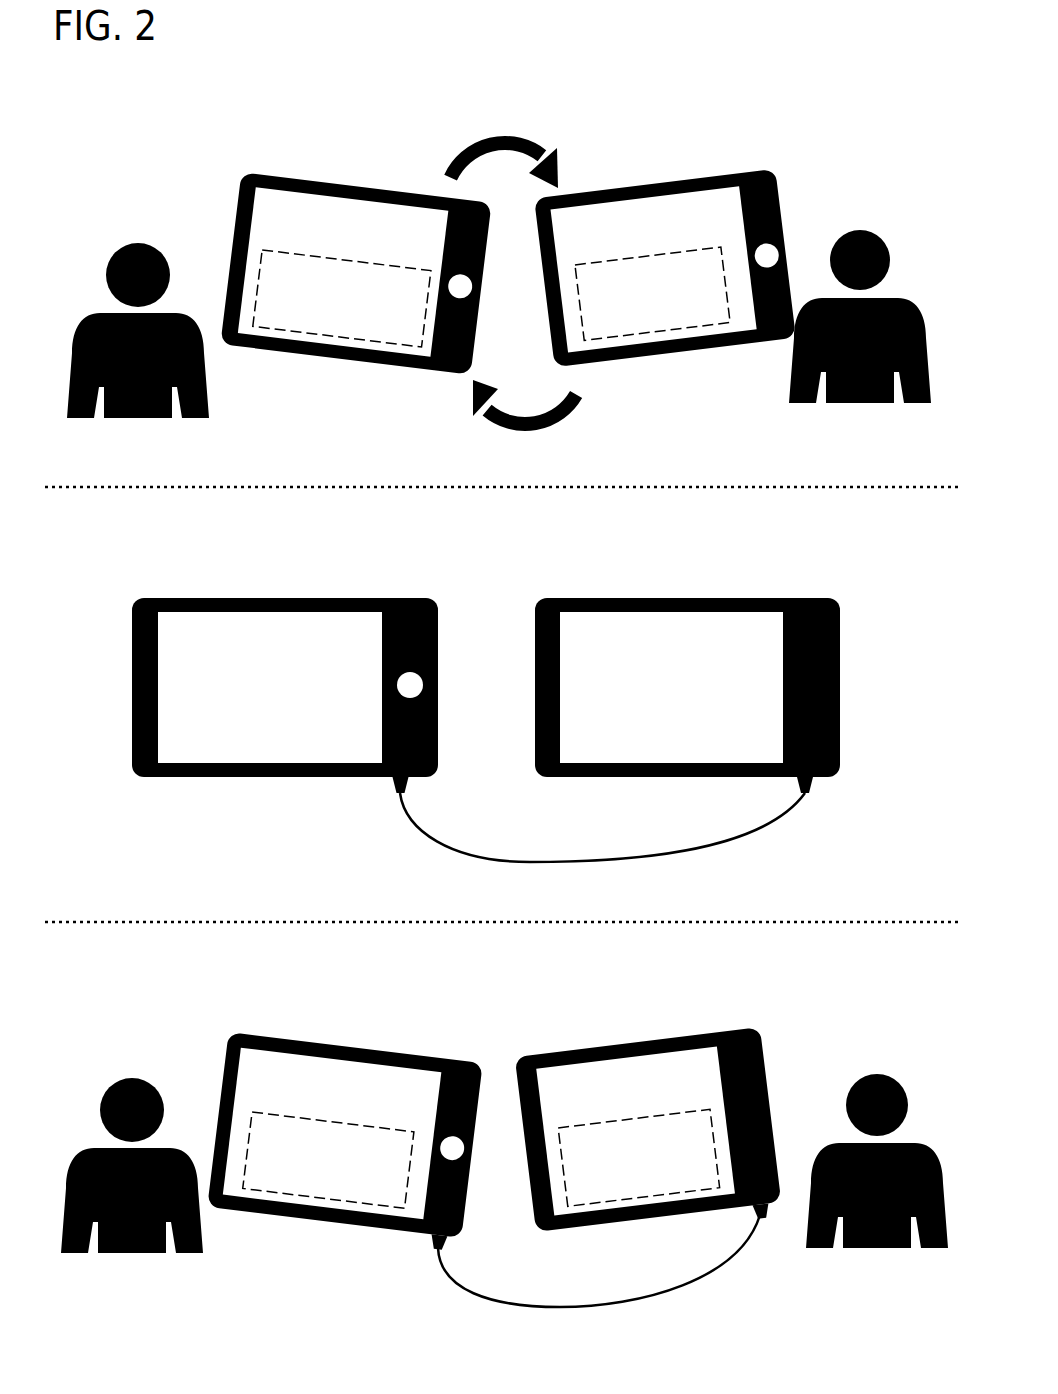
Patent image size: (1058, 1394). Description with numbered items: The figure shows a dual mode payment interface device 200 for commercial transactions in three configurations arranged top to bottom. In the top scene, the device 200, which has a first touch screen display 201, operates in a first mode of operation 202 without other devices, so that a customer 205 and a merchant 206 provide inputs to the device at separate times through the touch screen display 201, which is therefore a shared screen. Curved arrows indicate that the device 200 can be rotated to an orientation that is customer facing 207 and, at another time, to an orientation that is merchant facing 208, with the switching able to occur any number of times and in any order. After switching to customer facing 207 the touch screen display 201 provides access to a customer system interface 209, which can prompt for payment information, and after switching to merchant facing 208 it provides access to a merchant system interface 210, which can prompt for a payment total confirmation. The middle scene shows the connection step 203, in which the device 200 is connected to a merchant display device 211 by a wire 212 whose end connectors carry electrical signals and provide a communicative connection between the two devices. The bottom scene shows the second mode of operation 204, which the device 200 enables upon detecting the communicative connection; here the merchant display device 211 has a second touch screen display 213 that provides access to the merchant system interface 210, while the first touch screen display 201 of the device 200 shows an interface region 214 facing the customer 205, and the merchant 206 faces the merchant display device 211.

The dual mode payment interface device 200 is at (253, 172).
The first touch screen display 201 is at (457, 702).
The first mode of operation 202 is at (502, 271).
The connection step 203 is at (502, 711).
The second mode of operation 204 is at (183, 970).
The customer 205 is at (135, 748).
The merchant 206 is at (868, 739).
The customer facing orientation 207 is at (568, 422).
The merchant facing orientation 208 is at (458, 158).
The customer system interface 209 is at (342, 298).
The merchant system interface 210 is at (644, 726).
The merchant display device 211 is at (637, 598).
The wire 212 is at (700, 850).
The second touch screen display 213 is at (659, 914).
The display region 214 is at (328, 1160).